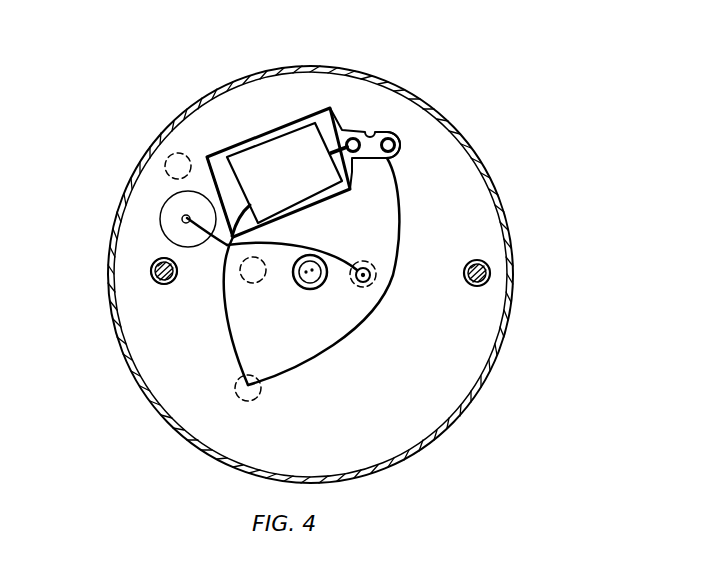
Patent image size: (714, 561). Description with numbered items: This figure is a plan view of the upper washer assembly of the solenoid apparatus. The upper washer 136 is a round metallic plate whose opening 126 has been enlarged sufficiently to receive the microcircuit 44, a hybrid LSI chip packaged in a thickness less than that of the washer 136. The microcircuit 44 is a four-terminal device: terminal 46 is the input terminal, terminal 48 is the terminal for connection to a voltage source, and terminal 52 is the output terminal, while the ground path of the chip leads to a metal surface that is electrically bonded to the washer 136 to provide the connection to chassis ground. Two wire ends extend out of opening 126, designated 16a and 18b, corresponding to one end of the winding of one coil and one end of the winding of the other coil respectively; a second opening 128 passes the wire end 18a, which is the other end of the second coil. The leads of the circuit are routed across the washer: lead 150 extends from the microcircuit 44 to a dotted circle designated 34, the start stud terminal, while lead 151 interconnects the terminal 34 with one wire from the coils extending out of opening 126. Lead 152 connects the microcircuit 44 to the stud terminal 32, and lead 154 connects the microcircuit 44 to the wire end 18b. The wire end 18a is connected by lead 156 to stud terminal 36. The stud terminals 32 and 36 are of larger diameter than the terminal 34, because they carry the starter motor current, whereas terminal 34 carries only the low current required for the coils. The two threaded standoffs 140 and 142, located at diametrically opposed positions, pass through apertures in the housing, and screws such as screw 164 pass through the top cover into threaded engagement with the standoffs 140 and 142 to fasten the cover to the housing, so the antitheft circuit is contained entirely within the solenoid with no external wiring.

The upper washer 136 is at (160, 150).
The stud terminal 32 is at (172, 152).
The lead 152 is at (222, 183).
The lead 154 is at (330, 108).
The wire end 18b is at (355, 137).
The opening 126 is at (380, 133).
The wire end 16a is at (400, 150).
The microcircuit 44 is at (267, 143).
The terminal 48 is at (208, 181).
The input terminal 46 is at (236, 226).
The output terminal 52 is at (324, 162).
The opening 128 is at (168, 197).
The wire end 18a is at (182, 219).
The screw 164 is at (151, 265).
The threaded standoff 140 is at (153, 282).
The threaded standoff 142 is at (487, 267).
The lead 151 is at (403, 218).
The lead 150 is at (232, 333).
The lead 156 is at (345, 252).
The stud terminal 36 is at (353, 282).
The stud terminal 34 is at (259, 399).